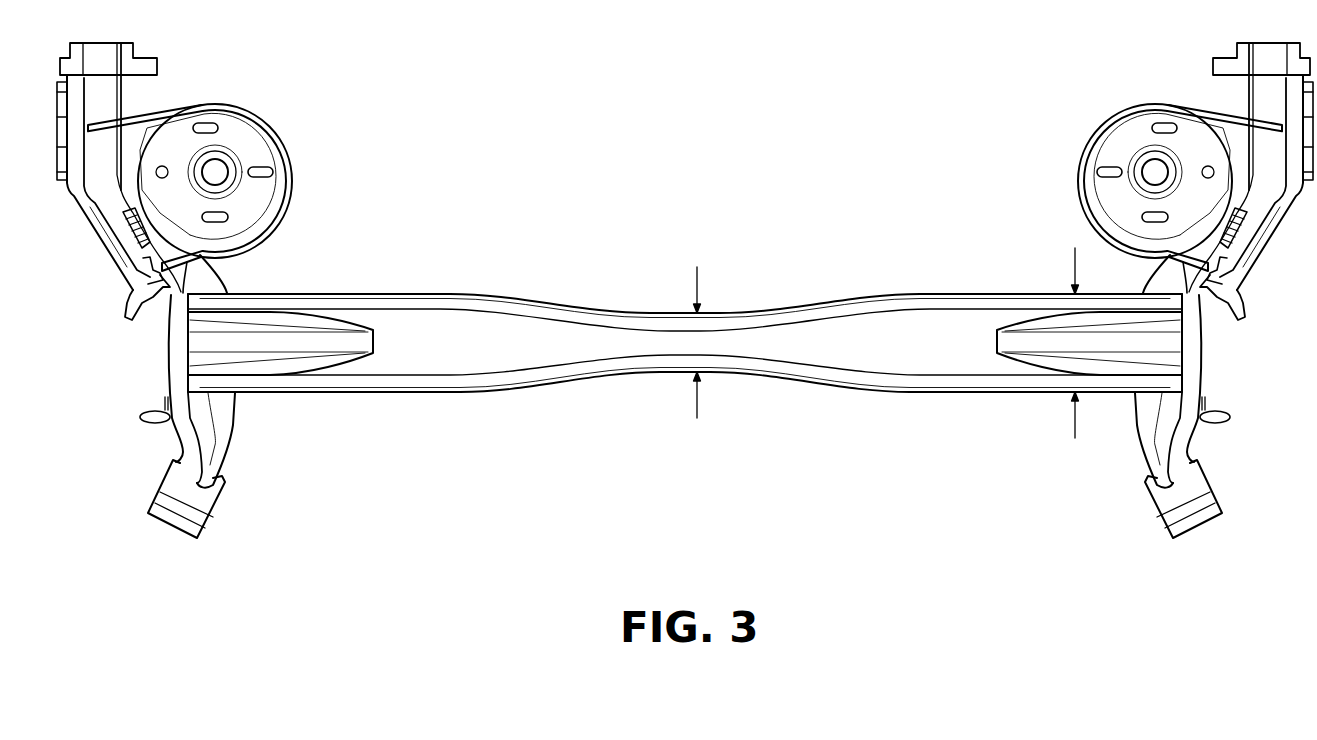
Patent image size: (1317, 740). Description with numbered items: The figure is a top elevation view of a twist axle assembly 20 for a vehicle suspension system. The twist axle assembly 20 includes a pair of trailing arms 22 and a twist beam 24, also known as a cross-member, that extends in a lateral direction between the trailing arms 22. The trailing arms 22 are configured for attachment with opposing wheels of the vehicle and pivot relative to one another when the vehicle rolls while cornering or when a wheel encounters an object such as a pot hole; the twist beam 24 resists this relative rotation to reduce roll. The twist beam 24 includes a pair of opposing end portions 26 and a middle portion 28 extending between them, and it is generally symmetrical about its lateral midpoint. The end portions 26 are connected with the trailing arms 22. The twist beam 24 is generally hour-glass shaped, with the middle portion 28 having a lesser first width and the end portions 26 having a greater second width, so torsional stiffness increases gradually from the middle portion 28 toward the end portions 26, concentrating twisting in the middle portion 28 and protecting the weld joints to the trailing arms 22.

The twist axle assembly 20 is at (717, 245).
The trailing arms 22 is at (107, 97).
The twist beam 24 is at (782, 272).
The end portions 26 is at (348, 292).
The middle portion 28 is at (650, 310).